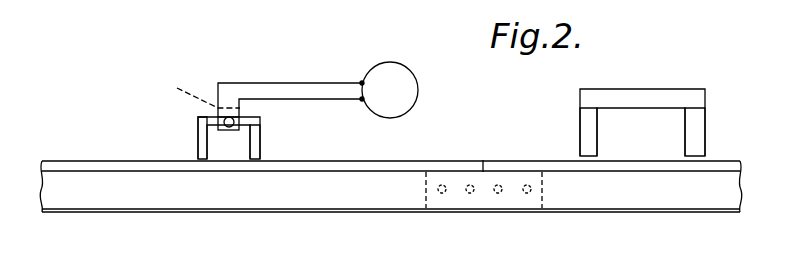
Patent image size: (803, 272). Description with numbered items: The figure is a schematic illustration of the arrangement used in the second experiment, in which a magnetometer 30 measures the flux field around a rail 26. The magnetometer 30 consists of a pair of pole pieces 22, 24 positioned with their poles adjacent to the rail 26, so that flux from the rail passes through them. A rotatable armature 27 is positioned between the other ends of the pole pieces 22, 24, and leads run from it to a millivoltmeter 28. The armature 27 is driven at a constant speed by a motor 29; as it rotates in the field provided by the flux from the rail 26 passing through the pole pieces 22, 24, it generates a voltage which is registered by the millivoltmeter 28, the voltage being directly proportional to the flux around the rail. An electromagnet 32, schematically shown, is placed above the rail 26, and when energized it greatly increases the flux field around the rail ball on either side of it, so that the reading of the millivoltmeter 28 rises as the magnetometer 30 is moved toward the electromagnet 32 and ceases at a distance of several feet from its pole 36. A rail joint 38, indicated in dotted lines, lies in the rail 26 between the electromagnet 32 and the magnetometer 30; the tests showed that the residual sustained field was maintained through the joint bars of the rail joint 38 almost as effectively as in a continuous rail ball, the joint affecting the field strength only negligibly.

The pole piece 22 is at (203, 149).
The pole piece 24 is at (255, 141).
The rail 26 is at (298, 200).
The rotatable armature 27 is at (229, 128).
The millivoltmeter 28 is at (390, 72).
The motor 29 is at (201, 95).
The magnetometer 30 is at (191, 125).
The electromagnet 32 is at (585, 104).
The pole 36 is at (585, 144).
The rail joint 38 is at (508, 200).